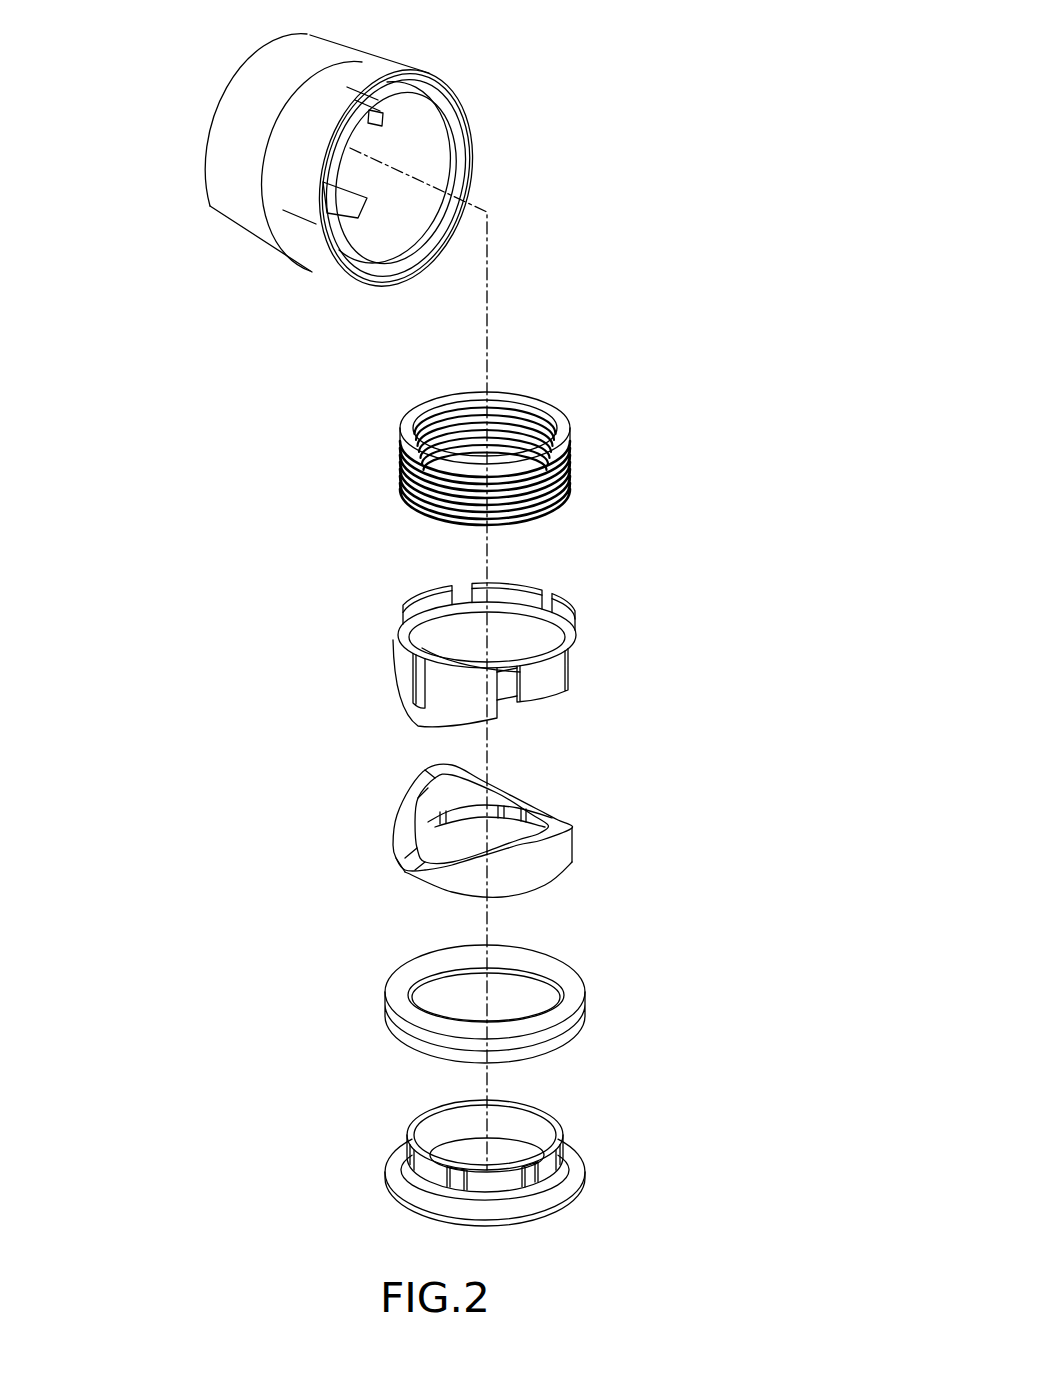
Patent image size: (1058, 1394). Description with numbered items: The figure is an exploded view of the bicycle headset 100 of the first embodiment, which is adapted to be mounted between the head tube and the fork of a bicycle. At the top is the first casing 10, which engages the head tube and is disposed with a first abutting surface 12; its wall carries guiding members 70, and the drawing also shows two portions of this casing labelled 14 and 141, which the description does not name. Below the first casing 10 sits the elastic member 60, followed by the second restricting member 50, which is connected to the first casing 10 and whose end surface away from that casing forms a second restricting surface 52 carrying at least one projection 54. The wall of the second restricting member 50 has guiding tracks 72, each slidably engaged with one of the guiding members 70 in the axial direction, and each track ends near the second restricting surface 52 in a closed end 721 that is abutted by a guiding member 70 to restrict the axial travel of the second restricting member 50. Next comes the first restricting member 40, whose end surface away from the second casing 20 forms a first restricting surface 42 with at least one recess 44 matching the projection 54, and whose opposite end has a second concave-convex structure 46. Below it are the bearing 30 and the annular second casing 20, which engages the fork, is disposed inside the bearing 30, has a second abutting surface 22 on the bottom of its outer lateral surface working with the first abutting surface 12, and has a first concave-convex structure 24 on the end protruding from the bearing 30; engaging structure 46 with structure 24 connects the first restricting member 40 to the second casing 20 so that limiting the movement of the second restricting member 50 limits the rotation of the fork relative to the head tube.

The bicycle headset 100 is at (637, 255).
The first casing 10 is at (346, 40).
The first abutting surface 12 is at (443, 170).
The cylindrical body 14 is at (245, 212).
The reduced front section 141 is at (400, 78).
The guiding member 70 is at (380, 120).
The elastic member 60 is at (548, 405).
The second restricting member 50 is at (388, 634).
The second restricting surface 52 is at (512, 690).
The projection 54 is at (420, 725).
The guiding track 72 is at (542, 602).
The closed end 721 is at (413, 705).
The first restricting member 40 is at (578, 845).
The first restricting surface 42 is at (520, 792).
The recess 44 is at (548, 820).
The second concave-convex structure 46 is at (417, 860).
The bearing 30 is at (585, 1003).
The second casing 20 is at (594, 1181).
The second abutting surface 22 is at (563, 1173).
The first concave-convex structure 24 is at (440, 1108).